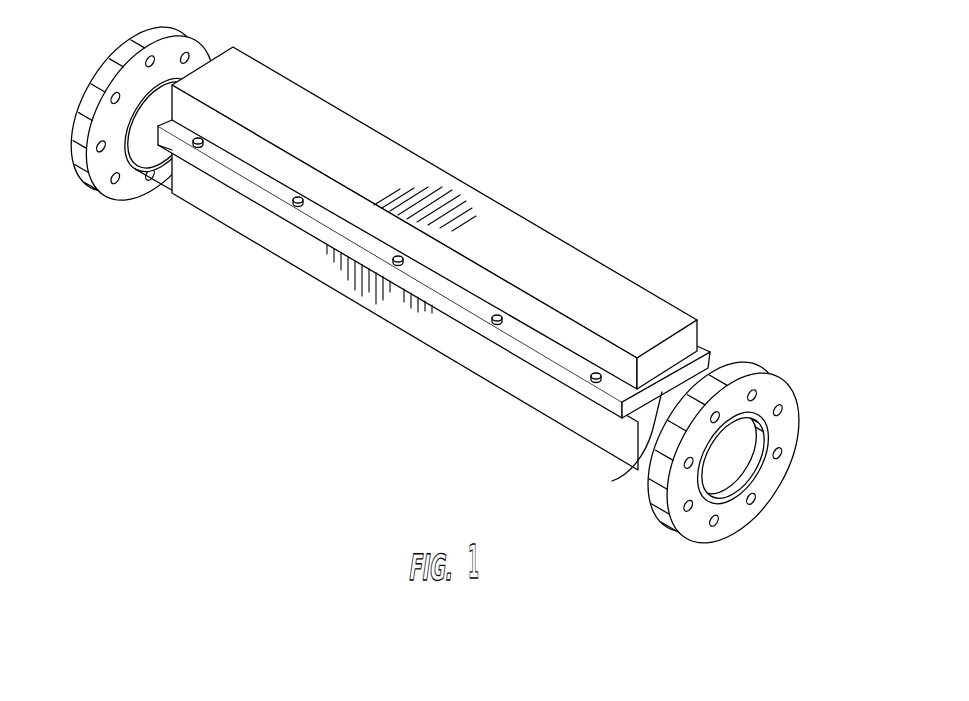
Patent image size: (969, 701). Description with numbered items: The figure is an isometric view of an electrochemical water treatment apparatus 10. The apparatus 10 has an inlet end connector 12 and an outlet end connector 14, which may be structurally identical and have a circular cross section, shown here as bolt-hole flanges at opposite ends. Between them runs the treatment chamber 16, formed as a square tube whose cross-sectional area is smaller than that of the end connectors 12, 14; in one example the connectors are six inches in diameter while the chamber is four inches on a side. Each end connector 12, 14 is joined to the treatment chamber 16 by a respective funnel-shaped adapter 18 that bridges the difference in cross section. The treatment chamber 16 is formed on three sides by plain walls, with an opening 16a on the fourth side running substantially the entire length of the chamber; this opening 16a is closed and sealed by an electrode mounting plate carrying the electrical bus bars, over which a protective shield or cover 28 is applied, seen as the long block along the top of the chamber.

The water treatment apparatus 10 is at (443, 285).
The inlet end connector 12 is at (783, 437).
The outlet end connector 14 is at (103, 82).
The treatment chamber 16 is at (402, 313).
The opening 16a is at (647, 430).
The adapter 18 is at (141, 149).
The protective shield or cover 28 is at (432, 183).